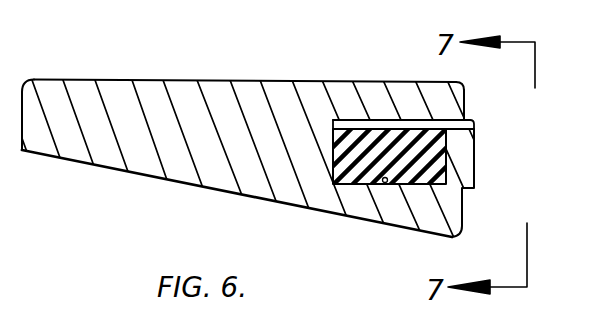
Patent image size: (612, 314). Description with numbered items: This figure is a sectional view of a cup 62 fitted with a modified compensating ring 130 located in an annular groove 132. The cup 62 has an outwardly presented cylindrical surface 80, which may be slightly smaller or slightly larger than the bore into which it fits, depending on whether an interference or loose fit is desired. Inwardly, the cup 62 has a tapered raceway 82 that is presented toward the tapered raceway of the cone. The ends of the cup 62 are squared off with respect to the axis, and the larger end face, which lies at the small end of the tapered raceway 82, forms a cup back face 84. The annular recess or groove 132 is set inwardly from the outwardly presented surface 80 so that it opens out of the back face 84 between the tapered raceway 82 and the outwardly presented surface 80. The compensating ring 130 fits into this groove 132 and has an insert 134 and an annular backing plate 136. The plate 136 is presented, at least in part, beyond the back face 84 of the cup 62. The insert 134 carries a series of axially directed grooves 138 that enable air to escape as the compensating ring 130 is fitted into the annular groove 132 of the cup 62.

The cup 62 is at (128, 99).
The outwardly presented cylindrical surface 80 is at (230, 81).
The tapered raceway 82 is at (113, 171).
The cup back face 84 is at (461, 212).
The compensating ring 130 is at (414, 146).
The annular groove 132 is at (385, 185).
The insert 134 is at (350, 173).
The annular backing plate 136 is at (470, 145).
The axially directed grooves 138 is at (360, 121).